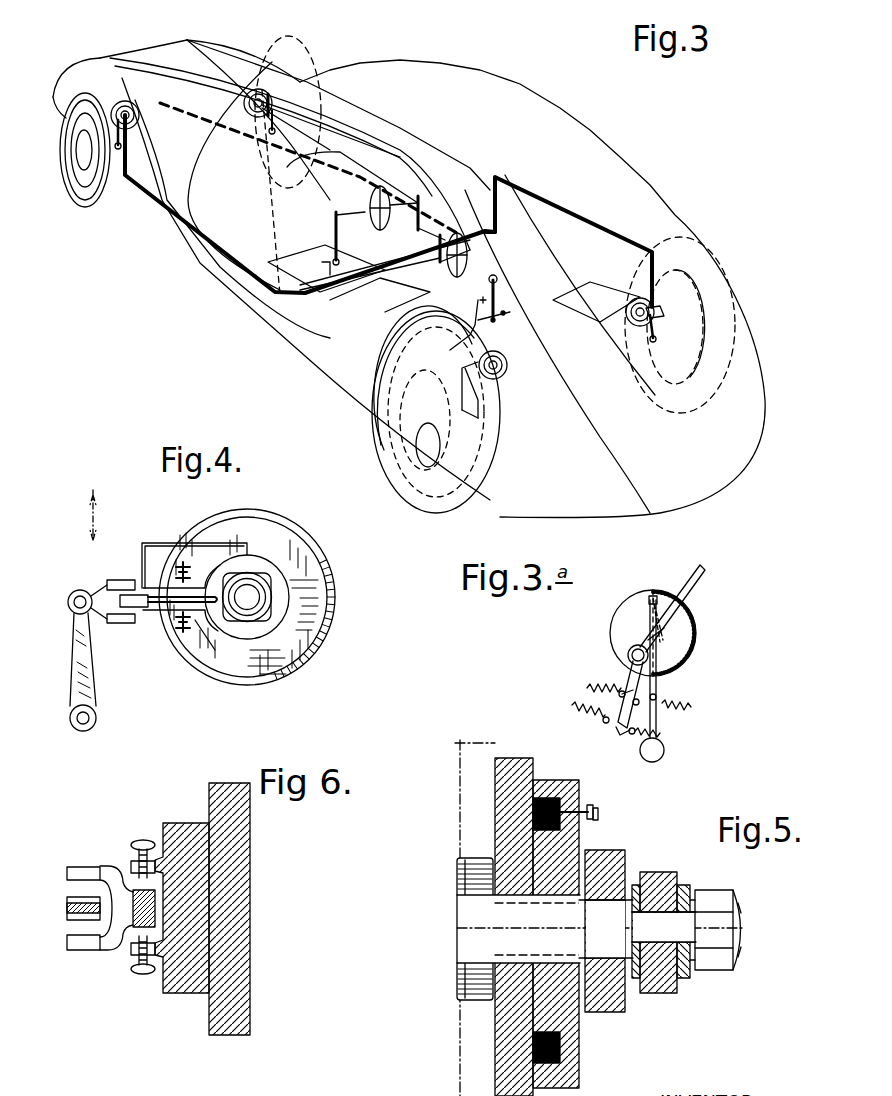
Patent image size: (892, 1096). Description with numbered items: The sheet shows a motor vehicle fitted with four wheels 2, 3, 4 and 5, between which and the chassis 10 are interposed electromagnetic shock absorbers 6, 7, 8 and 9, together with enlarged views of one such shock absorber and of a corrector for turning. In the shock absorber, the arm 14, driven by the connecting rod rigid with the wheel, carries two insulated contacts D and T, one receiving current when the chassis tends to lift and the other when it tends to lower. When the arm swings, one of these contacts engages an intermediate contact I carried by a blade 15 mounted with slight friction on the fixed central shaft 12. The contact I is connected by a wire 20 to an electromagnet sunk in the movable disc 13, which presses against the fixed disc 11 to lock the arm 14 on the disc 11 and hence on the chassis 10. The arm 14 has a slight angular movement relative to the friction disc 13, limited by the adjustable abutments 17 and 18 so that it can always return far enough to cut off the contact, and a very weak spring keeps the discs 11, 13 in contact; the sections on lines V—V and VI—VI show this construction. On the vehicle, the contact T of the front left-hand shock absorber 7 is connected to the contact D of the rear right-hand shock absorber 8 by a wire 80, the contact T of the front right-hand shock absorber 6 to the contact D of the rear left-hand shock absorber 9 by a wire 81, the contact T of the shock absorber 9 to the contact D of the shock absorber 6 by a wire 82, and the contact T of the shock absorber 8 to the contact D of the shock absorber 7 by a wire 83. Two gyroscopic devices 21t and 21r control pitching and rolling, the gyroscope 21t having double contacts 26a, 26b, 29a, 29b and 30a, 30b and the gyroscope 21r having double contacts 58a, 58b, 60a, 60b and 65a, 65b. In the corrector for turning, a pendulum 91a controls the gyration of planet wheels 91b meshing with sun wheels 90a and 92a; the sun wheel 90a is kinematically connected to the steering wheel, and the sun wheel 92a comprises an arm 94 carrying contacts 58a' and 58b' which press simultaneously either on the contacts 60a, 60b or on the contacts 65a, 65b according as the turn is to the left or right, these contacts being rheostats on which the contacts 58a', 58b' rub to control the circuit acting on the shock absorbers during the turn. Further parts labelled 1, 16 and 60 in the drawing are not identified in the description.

In FIG. 3, the vehicle body 1 is at (148, 52).
In FIG. 3, the wheel 2 is at (262, 93).
In FIG. 3, the wheel 3 is at (82, 182).
In FIG. 3, the wheel 4 is at (735, 363).
In FIG. 3, the wheel 5 is at (443, 492).
In FIG. 3, the front right-hand shock absorber 6 is at (187, 41).
In FIG. 3, the front left-hand shock absorber 7 is at (130, 124).
In FIG. 3, the rear right-hand shock absorber 8 is at (628, 298).
In FIG. 3, the rear left-hand shock absorber 9 is at (455, 420).
In FIG. 5, the chassis 10 is at (462, 765).
In FIG. 4, the fixed disc 11 is at (313, 552).
In FIG. 5, the fixed disc 11 is at (508, 800).
In FIG. 6, the fixed disc 11 is at (225, 788).
In FIG. 4, the fixed central shaft 12 is at (258, 595).
In FIG. 5, the fixed central shaft 12 is at (505, 907).
In FIG. 4, the movable disc 13 is at (313, 607).
In FIG. 5, the movable disc 13 is at (565, 793).
In FIG. 6, the movable disc 13 is at (172, 823).
In FIG. 4, the arm of the shock absorber 14 is at (247, 560).
In FIG. 5, the arm of the shock absorber 14 is at (610, 873).
In FIG. 6, the arm of the shock absorber 14 is at (135, 888).
In FIG. 4, the blade 15 is at (203, 633).
In FIG. 5, the blade 15 is at (657, 897).
In FIG. 4, the lever arm 16 is at (78, 643).
In FIG. 4, the abutment 17 is at (180, 566).
In FIG. 6, the abutment 17 is at (143, 838).
In FIG. 4, the abutment 18 is at (182, 633).
In FIG. 6, the abutment 18 is at (142, 974).
In FIG. 4, the wire 20 is at (142, 545).
In FIG. 3, the gyroscopic device 21r is at (377, 190).
In FIG. 3, the gyroscopic device 21t is at (470, 250).
In FIG. 3, the double contact 26a is at (398, 286).
In FIG. 3, the double contact 26b is at (510, 358).
In FIG. 3, the double contact 29a is at (358, 290).
In FIG. 3, the double contact 29b is at (450, 350).
In FIG. 3, the double contact 30a is at (503, 313).
In FIG. 3, the double contact 30b is at (493, 320).
In FIG. 3, the double contact 58a is at (316, 262).
In FIG. 3, the double contact 58b is at (436, 182).
In FIG. 3a, the contact 58a' is at (615, 753).
In FIG. 3a, the contact 58b' is at (681, 688).
In FIG. 3, the wheel lever 60 is at (322, 262).
In FIG. 3a, the contact 60a is at (587, 689).
In FIG. 3, the contact 60b is at (415, 200).
In FIG. 3a, the contact 60b is at (606, 724).
In FIG. 3, the contact 65a is at (338, 238).
In FIG. 3a, the contact 65a is at (662, 703).
In FIG. 3, the contact 65b is at (435, 225).
In FIG. 3a, the contact 65b is at (632, 735).
In FIG. 3, the wire 80 is at (147, 193).
In FIG. 3, the wire 81 is at (287, 167).
In FIG. 3, the wire 82 is at (268, 98).
In FIG. 3, the wire 83 is at (253, 108).
In FIG. 3a, the sun wheel 90a is at (690, 622).
In FIG. 3a, the pendulum 91a is at (664, 748).
In FIG. 3a, the planet wheels 91b is at (650, 597).
In FIG. 3a, the sun wheel 92a is at (673, 655).
In FIG. 3a, the arm 94 is at (604, 684).
In FIG. 3, the insulated contact D is at (124, 108).
In FIG. 4, the insulated contact D is at (115, 583).
In FIG. 6, the insulated contact D is at (85, 872).
In FIG. 3, the intermediate contact I is at (120, 108).
In FIG. 4, the intermediate contact I is at (133, 608).
In FIG. 6, the intermediate contact I is at (67, 908).
In FIG. 3, the insulated contact T is at (122, 112).
In FIG. 4, the insulated contact T is at (115, 623).
In FIG. 6, the insulated contact T is at (83, 942).
In FIG. 4, the section line V— V is at (258, 493).
In FIG. 4, the section line VI— VI is at (172, 533).